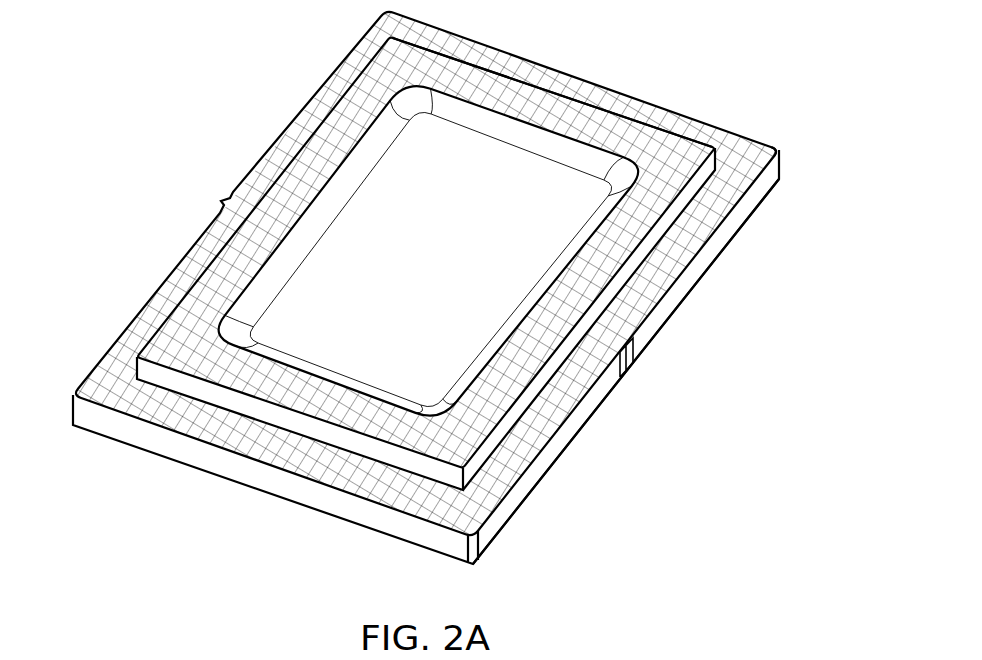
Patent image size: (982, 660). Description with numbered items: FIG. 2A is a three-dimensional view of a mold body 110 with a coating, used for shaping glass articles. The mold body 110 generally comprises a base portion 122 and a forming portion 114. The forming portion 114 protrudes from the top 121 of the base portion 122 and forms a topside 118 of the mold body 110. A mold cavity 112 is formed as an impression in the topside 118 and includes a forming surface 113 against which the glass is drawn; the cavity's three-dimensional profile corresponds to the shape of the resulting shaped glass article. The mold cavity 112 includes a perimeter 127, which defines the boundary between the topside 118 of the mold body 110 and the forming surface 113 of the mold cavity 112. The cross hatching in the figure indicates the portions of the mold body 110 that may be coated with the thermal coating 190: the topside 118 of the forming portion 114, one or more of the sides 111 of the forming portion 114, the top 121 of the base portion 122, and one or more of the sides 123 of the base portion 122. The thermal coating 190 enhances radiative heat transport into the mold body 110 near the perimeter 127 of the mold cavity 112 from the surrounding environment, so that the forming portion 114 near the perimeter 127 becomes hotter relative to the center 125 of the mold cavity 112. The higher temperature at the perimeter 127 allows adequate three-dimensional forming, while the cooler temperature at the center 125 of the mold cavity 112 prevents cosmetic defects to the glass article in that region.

The mold body 110 is at (491, 330).
The sides of the forming portion 111 is at (683, 200).
The mold cavity 112 is at (365, 207).
The forming surface 113 is at (332, 257).
The forming portion 114 is at (491, 330).
The topside 118 is at (595, 127).
The top of the base portion 121 is at (757, 150).
The base portion 122 is at (512, 523).
The sides of the base portion 123 is at (678, 300).
The center of the mold cavity 125 is at (442, 222).
The perimeter 127 is at (372, 123).
The thermal coating 190 is at (470, 80).